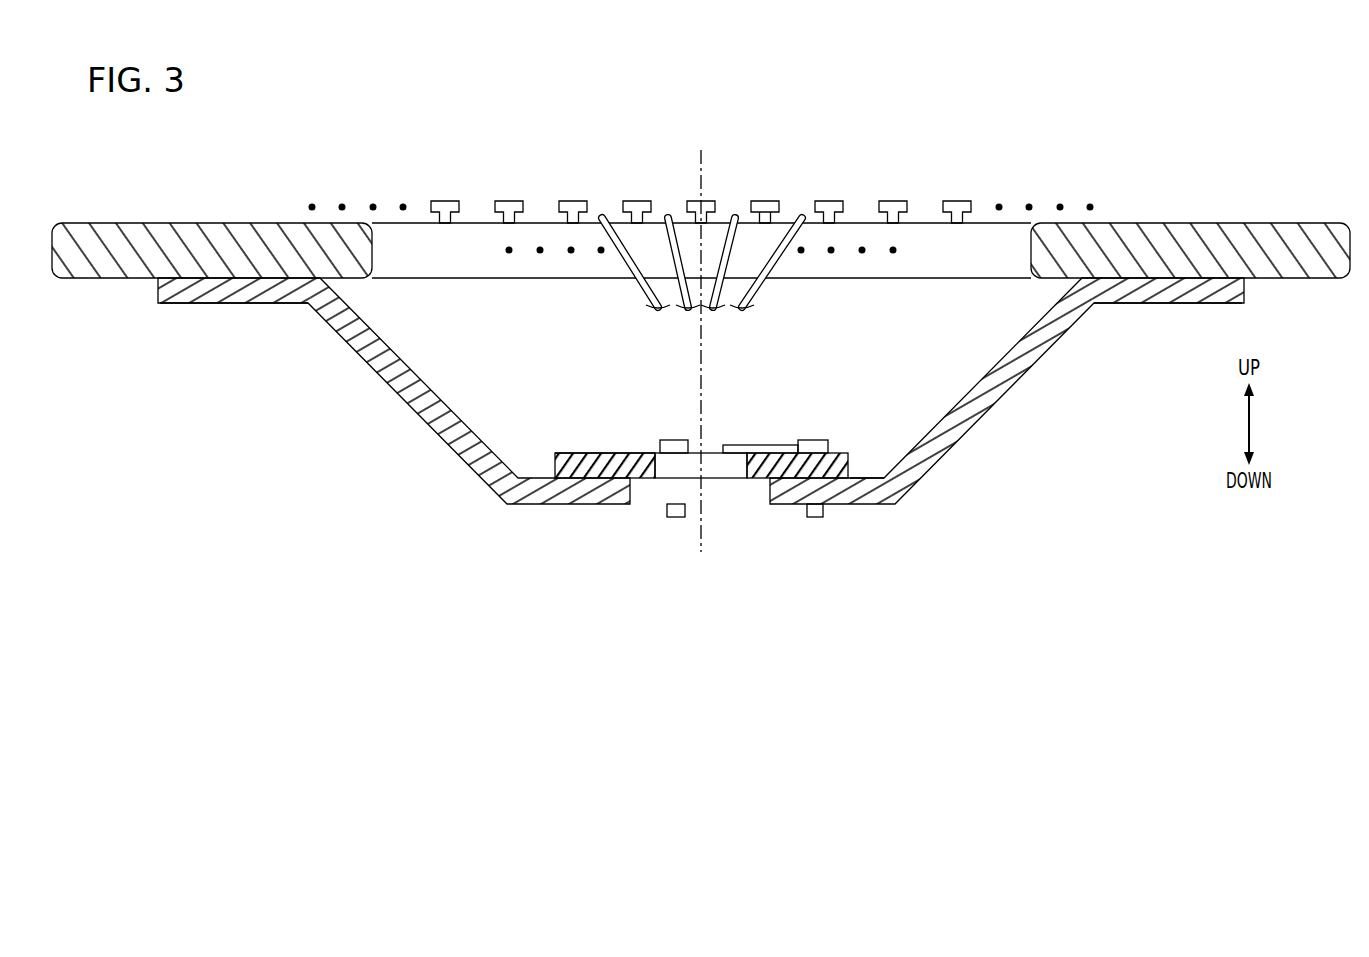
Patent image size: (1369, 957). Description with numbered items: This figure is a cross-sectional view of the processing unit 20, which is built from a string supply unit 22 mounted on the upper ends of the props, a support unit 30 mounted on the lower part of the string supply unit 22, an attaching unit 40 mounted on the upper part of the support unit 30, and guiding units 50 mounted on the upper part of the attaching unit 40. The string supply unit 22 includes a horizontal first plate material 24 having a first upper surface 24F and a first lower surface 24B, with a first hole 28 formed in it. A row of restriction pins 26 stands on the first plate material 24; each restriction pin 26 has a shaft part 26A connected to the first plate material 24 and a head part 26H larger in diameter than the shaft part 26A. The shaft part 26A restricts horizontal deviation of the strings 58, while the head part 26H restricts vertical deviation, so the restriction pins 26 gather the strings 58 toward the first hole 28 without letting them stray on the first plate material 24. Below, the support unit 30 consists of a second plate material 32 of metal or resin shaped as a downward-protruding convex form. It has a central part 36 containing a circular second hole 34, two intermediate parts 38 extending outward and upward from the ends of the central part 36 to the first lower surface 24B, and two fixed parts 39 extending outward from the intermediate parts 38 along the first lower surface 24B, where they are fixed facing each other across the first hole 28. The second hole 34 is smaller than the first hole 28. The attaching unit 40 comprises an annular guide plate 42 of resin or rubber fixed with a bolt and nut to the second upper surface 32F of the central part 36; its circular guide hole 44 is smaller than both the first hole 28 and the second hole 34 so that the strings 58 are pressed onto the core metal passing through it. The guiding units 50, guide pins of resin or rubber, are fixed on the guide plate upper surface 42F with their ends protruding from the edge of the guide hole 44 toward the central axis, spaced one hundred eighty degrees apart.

The processing unit 20 is at (1197, 82).
The string supply unit 22 is at (870, 103).
The first plate material 24 is at (856, 222).
The front surface of plate 24F is at (1163, 222).
The first lower surface 24B is at (1297, 279).
The restriction pin 26 is at (817, 138).
The head part 26H is at (752, 205).
The shaft part 26A is at (774, 218).
The first hole 28 is at (373, 257).
The support unit 30 is at (674, 418).
The second plate material 32 is at (162, 303).
The second upper surface 32F is at (873, 477).
The second hole 34 is at (632, 493).
The central part 36 is at (860, 496).
The intermediate part 38 is at (453, 450).
The fixed part 39 is at (262, 304).
The attaching unit 40 is at (667, 472).
The guide plate 42 is at (555, 470).
The guide plate upper surface 42F is at (613, 452).
The guide hole 44 is at (747, 462).
The guiding unit 50 is at (760, 444).
The string 58 is at (680, 286).